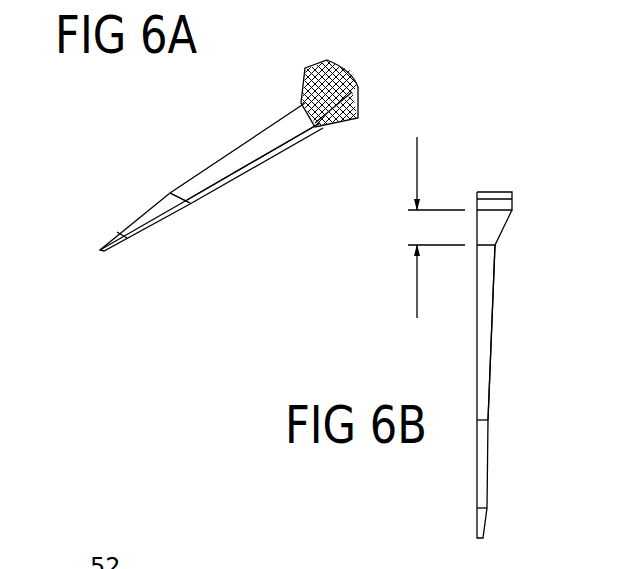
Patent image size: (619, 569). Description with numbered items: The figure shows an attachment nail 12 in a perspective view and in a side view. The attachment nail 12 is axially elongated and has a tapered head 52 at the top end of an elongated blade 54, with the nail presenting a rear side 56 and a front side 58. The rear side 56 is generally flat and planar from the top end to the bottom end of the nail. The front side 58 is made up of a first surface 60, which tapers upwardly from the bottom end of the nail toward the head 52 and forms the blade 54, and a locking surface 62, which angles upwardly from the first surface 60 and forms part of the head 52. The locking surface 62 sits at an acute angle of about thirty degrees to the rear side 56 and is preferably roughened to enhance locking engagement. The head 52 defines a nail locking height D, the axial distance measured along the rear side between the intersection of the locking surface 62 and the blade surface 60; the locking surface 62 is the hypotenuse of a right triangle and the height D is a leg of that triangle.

In FIG. 6A, the attachment nail 12 is at (123, 140).
In FIG. 6B, the attachment nail 12 is at (408, 332).
In FIG. 6A, the tapered head 52 is at (302, 82).
In FIG. 6B, the tapered head 52 is at (512, 207).
In FIG. 6A, the elongated blade 54 is at (230, 143).
In FIG. 6B, the elongated blade 54 is at (488, 368).
In FIG. 6A, the rear side 56 is at (183, 193).
In FIG. 6B, the rear side 56 is at (477, 348).
In FIG. 6A, the front side 58 is at (145, 217).
In FIG. 6B, the front side 58 is at (487, 432).
In FIG. 6A, the first surface 60 is at (252, 147).
In FIG. 6B, the first surface 60 is at (493, 312).
In FIG. 6A, the locking surface 62 is at (327, 88).
In FIG. 6B, the locking surface 62 is at (503, 227).
In FIG. 6B, the nail locking height D is at (436, 227).